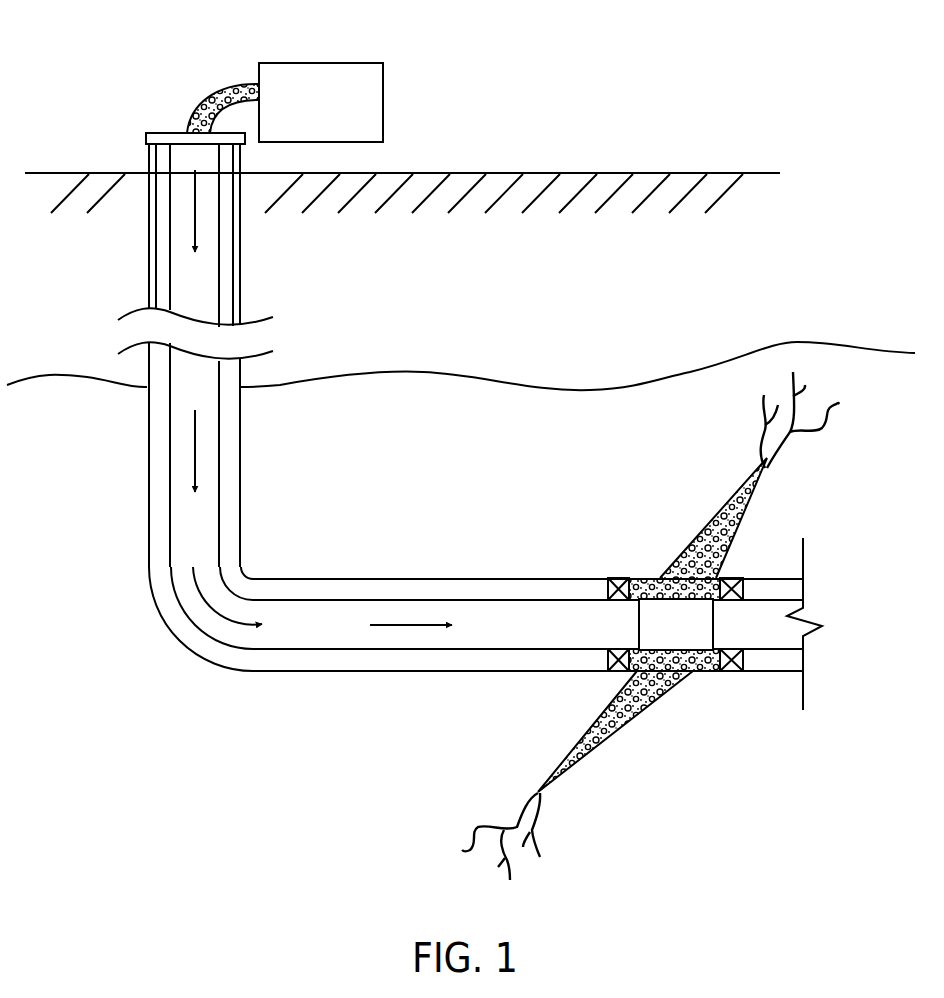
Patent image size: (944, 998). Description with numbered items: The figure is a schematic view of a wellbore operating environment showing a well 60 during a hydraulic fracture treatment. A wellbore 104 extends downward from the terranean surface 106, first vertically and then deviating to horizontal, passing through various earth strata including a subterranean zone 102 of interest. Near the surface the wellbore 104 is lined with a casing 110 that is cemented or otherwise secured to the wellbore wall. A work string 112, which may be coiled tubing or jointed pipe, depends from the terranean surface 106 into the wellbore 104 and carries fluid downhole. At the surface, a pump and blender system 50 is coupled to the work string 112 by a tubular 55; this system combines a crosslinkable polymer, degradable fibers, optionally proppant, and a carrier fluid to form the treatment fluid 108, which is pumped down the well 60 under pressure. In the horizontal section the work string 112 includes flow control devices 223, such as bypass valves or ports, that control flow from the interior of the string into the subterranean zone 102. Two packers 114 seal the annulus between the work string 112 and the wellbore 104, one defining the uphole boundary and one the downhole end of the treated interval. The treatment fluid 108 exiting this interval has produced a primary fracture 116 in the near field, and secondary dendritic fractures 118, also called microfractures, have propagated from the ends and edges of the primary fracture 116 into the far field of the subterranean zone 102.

The pump and blender system 50 is at (335, 112).
The tubular 55 is at (223, 83).
The well 60 is at (156, 666).
The subterranean zone 102 is at (498, 417).
The wellbore 104 is at (163, 264).
The terranean surface 106 is at (580, 173).
The treatment fluid 108 is at (200, 107).
The casing 110 is at (152, 298).
The work string 112 is at (170, 499).
The packers 114 is at (621, 578).
The primary fracture 116 is at (693, 522).
The dendritic fractures 118 is at (748, 401).
The flow control devices 223 is at (695, 636).